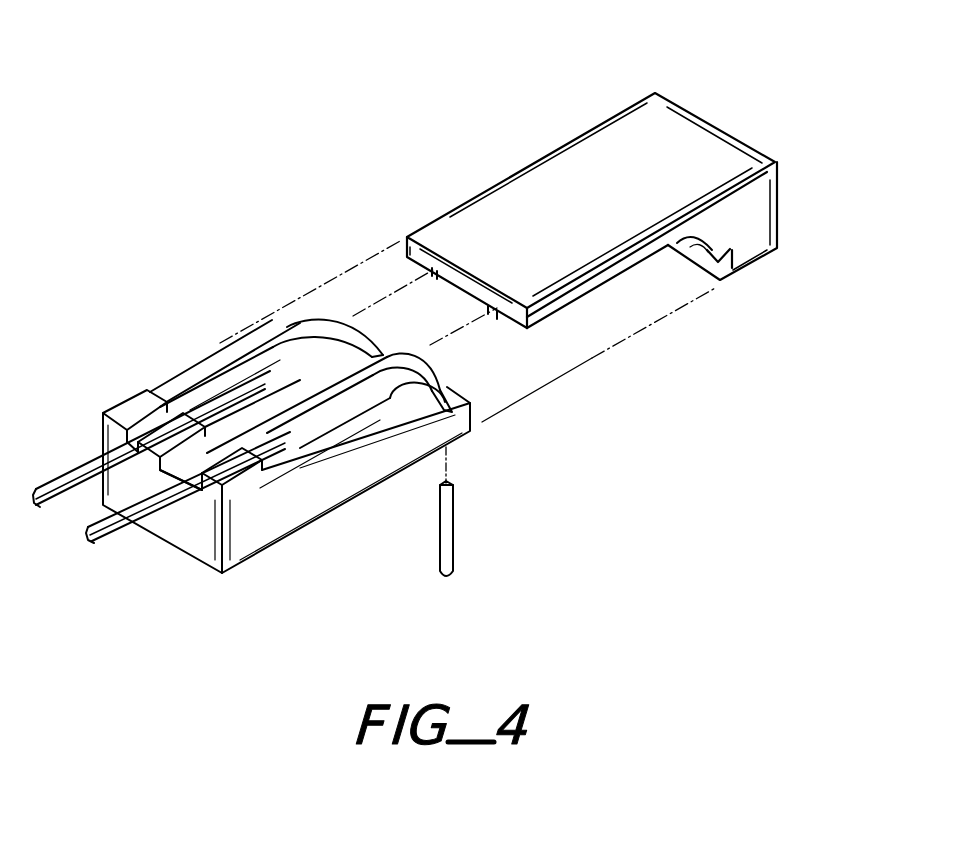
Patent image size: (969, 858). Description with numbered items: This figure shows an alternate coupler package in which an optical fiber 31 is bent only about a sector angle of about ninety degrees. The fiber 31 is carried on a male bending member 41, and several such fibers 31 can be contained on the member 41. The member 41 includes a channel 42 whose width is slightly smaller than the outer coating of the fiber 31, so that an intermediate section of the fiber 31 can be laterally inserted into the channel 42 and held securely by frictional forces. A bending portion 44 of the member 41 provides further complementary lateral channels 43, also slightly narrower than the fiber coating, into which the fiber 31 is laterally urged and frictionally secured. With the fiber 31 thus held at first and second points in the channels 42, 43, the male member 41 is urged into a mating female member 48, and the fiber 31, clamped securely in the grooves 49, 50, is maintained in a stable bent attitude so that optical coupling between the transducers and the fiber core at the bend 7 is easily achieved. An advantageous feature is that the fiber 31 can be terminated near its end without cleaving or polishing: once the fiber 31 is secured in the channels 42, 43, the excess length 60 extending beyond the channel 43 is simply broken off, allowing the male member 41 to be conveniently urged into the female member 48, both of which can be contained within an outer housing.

The bend 7 is at (428, 366).
The optical fiber 31 is at (80, 462).
The bending member 41 is at (337, 470).
The channel 42 is at (210, 437).
The complementary channel 43 is at (442, 390).
The bending portion 44 is at (353, 337).
The female member 48 is at (613, 167).
The groove 49 is at (493, 313).
The groove 50 is at (297, 343).
The excess length 60 is at (450, 538).